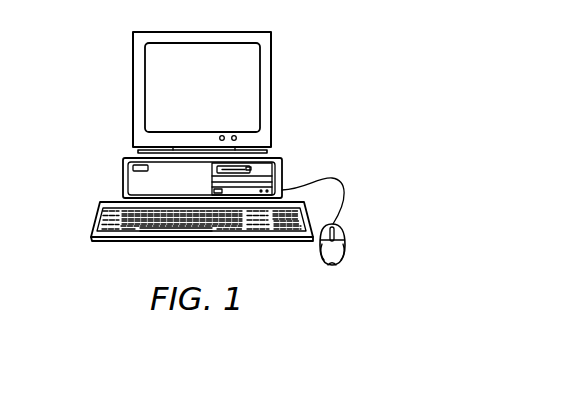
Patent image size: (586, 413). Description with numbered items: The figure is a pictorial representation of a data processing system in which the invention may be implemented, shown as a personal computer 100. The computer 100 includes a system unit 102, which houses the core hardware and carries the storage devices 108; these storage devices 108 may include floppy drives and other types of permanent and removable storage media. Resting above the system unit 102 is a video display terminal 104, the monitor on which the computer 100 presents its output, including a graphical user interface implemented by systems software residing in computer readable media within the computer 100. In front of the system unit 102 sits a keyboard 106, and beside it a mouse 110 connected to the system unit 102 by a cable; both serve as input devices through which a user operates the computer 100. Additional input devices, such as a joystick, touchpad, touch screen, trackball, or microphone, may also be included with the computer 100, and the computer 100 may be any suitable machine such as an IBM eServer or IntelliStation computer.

The computer 100 is at (72, 77).
The system unit 102 is at (123, 180).
The video display terminal 104 is at (271, 91).
The keyboard 106 is at (118, 242).
The storage devices 108 is at (250, 168).
The mouse 110 is at (332, 266).